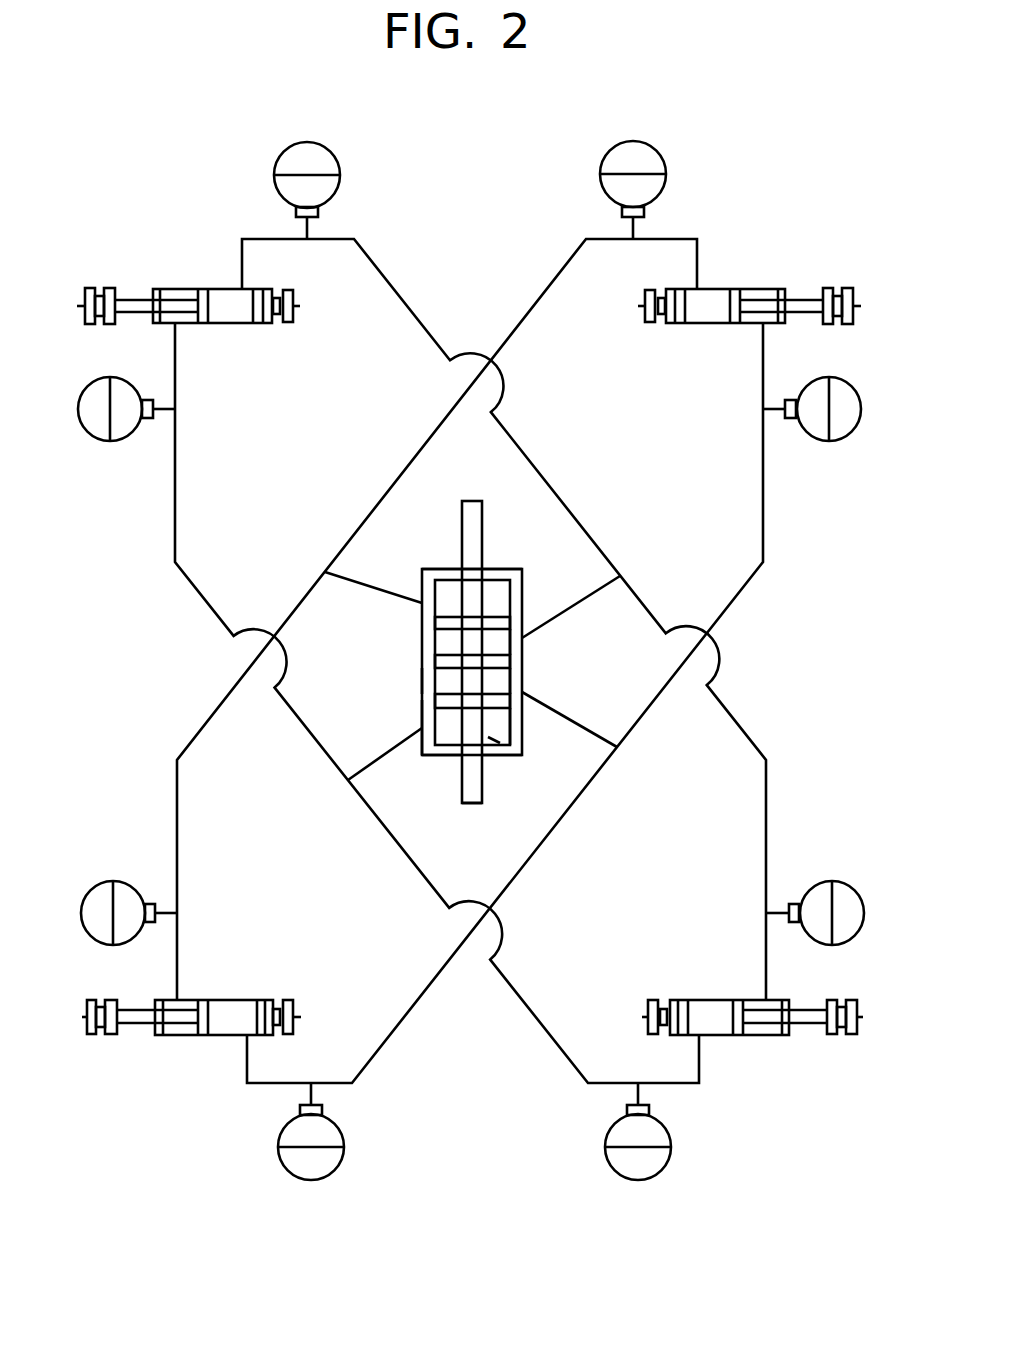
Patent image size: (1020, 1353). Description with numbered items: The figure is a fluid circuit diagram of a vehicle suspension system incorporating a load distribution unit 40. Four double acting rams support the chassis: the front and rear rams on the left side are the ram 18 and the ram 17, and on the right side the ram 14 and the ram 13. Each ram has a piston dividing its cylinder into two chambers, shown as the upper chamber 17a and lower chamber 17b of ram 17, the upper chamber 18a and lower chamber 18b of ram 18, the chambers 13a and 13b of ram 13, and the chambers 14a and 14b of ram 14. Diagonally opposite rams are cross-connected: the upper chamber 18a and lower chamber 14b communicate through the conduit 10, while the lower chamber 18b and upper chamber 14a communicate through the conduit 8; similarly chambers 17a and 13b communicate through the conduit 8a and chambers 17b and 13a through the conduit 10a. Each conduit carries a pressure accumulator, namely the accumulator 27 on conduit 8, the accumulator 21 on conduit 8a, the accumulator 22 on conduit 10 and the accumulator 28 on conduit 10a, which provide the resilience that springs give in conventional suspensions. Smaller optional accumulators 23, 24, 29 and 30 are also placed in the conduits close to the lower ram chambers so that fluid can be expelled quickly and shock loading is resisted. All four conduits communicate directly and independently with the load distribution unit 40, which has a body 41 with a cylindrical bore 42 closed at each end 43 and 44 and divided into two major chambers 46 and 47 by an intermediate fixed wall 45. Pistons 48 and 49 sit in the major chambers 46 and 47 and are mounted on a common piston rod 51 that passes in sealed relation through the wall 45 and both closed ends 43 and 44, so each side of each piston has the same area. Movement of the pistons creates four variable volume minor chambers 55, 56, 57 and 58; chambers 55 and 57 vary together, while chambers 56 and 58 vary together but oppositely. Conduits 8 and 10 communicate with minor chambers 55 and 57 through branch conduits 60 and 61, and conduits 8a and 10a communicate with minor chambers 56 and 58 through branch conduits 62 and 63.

The conduit 8 is at (175, 493).
The conduit 8a is at (763, 500).
The conduit 10 is at (392, 283).
The conduit 10a is at (527, 311).
The double acting ram 13 is at (749, 278).
The upper chamber 13a is at (718, 288).
The lower chamber 13b is at (768, 288).
The double acting ram 14 is at (775, 1010).
The upper chamber 14a is at (715, 1000).
The lower chamber 14b is at (848, 1000).
The double acting ram 17 is at (191, 1018).
The upper chamber 17a is at (232, 1000).
The lower chamber 17b is at (177, 1000).
The double acting ram 18 is at (188, 293).
The upper chamber 18a is at (220, 288).
The lower chamber 18b is at (168, 288).
The pressure accumulator 21 is at (270, 1178).
The pressure accumulator 22 is at (264, 146).
The accumulator 23 is at (90, 385).
The accumulator 24 is at (850, 885).
The pressure accumulator 27 is at (684, 1176).
The pressure accumulator 28 is at (672, 140).
The accumulator 29 is at (838, 385).
The accumulator 30 is at (82, 895).
The load distribution unit 40 is at (488, 569).
The body 41 is at (423, 687).
The cylindrical bore 42 is at (512, 757).
The closed end 43 is at (460, 757).
The closed end 44 is at (453, 568).
The intermediate fixed wall 45 is at (447, 663).
The major chamber 46 is at (420, 600).
The major chamber 47 is at (423, 728).
The piston 48 is at (457, 703).
The piston 49 is at (453, 622).
The common piston rod 51 is at (462, 800).
The minor chamber 55 is at (497, 738).
The minor chamber 56 is at (505, 673).
The minor chamber 57 is at (507, 655).
The minor chamber 58 is at (507, 587).
The branch conduit 60 is at (377, 770).
The branch conduit 61 is at (553, 617).
The branch conduit 62 is at (573, 720).
The branch conduit 63 is at (380, 581).